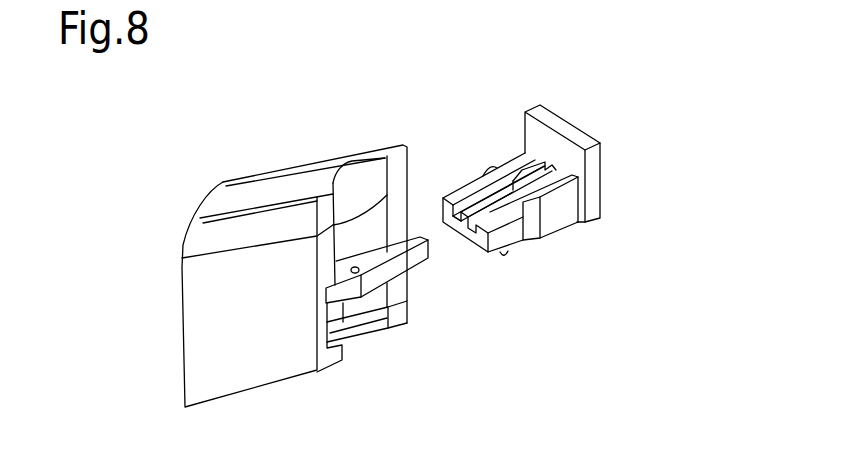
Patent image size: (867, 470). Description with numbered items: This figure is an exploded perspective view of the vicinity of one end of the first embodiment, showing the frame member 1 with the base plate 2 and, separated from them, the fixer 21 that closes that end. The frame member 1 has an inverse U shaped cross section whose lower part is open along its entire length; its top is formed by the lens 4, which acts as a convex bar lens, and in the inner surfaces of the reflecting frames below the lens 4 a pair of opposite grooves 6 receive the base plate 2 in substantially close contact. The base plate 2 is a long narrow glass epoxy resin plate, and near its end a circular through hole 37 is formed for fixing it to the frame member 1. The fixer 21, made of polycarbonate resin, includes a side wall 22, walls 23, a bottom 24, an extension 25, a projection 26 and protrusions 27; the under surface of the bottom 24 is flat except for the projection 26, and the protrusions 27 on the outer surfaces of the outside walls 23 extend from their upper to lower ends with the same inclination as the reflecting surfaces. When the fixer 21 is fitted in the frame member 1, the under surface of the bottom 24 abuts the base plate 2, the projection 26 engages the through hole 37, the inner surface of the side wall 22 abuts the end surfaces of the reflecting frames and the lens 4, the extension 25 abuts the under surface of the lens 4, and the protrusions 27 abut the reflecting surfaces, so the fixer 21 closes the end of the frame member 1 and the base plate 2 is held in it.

The frame member 1 is at (185, 240).
The base plate 2 is at (410, 258).
The lens 4 is at (290, 185).
The grooves 6 is at (333, 293).
The fixer 21 is at (620, 206).
The side wall 22 is at (577, 133).
The walls 23 is at (563, 215).
The bottom 24 is at (463, 234).
The extension 25 is at (542, 165).
The projection 26 is at (508, 256).
The protrusions 27 is at (535, 238).
The through hole 37 is at (355, 266).